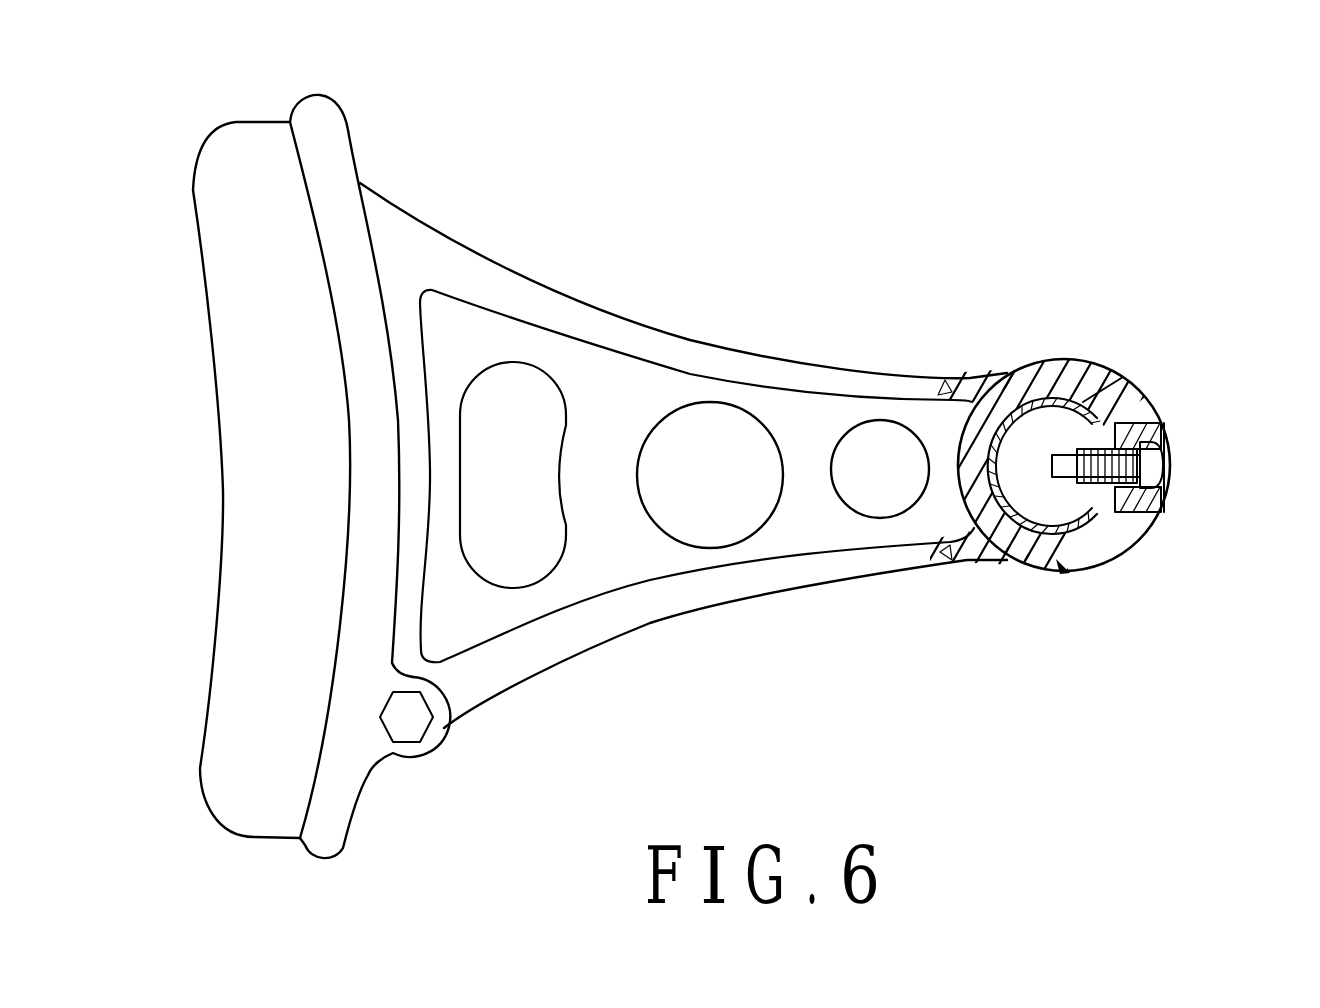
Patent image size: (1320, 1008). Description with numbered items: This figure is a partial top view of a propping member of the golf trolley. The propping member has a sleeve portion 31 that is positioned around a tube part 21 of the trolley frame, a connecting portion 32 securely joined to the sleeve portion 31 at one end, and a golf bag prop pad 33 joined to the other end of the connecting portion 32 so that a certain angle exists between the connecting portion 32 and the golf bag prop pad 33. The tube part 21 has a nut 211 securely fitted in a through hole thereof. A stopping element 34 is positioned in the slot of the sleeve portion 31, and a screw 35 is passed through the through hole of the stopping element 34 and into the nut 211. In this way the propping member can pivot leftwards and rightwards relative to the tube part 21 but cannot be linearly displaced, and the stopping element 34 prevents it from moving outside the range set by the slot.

The golf bag prop pad 33 is at (239, 172).
The connecting portion 32 is at (670, 343).
The sleeve portion 31 is at (1038, 370).
The nut 211 is at (1093, 425).
The screw 35 is at (1148, 467).
The stopping element 34 is at (1167, 497).
The tube part 21 is at (1033, 565).